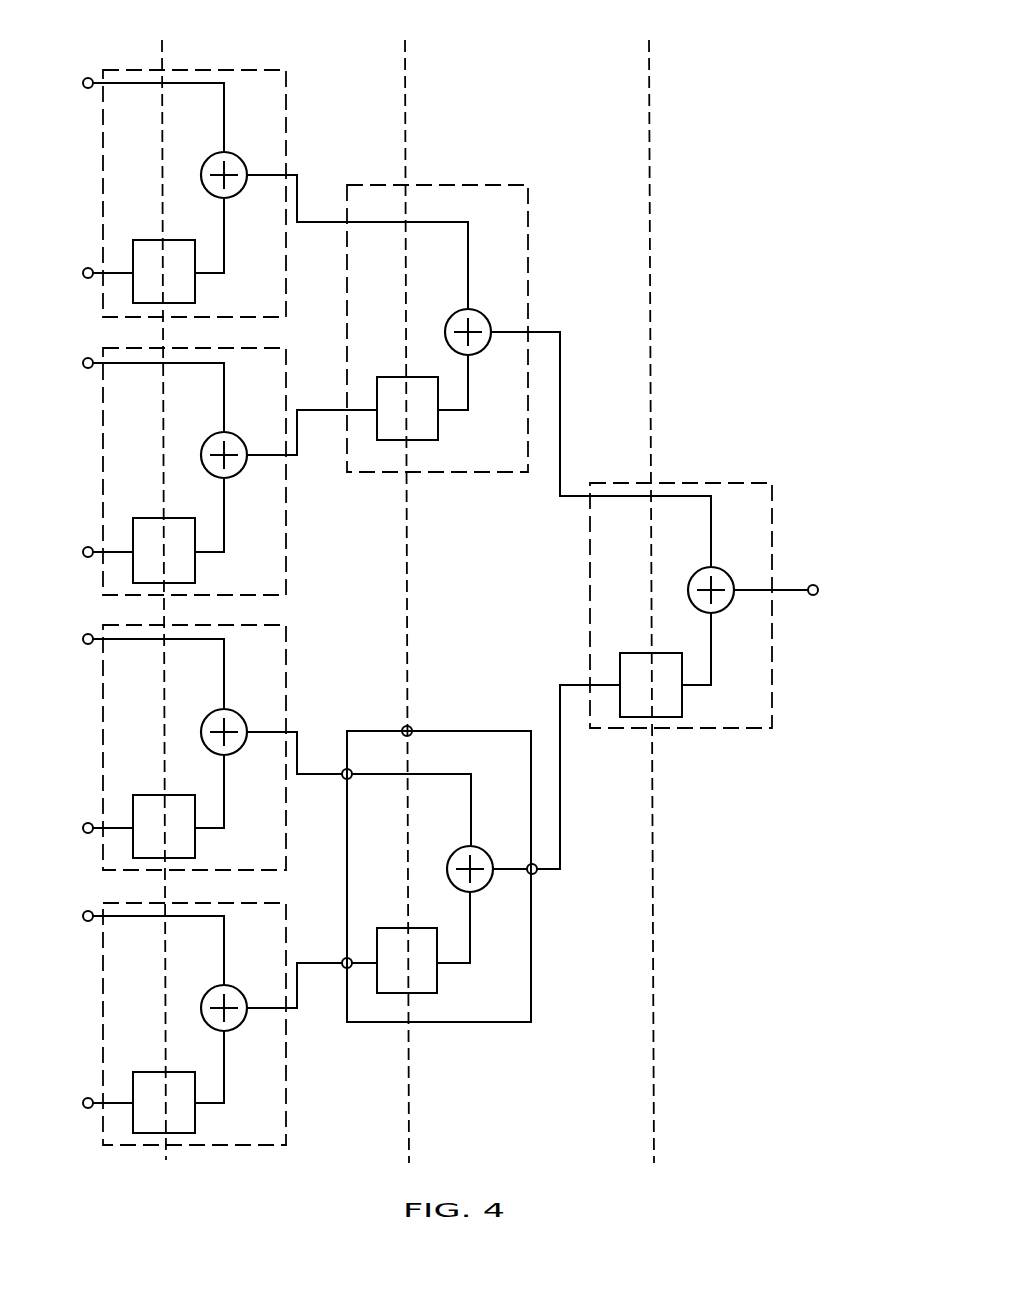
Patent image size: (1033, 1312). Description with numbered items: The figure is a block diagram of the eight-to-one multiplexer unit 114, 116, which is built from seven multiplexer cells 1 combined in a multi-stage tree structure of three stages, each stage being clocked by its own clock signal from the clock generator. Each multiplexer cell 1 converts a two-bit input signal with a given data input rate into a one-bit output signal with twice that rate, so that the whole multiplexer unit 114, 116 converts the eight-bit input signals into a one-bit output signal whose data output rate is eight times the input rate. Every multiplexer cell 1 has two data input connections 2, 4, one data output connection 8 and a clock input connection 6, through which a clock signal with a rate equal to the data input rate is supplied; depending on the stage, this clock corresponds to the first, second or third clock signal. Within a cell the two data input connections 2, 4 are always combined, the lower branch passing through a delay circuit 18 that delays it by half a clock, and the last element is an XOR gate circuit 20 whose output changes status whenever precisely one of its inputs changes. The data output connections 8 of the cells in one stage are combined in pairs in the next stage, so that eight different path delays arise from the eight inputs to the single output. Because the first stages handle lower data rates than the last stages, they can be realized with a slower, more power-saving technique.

The multiplexer cell 1 is at (532, 995).
The data input connection 2 is at (342, 771).
The data input connection 4 is at (343, 967).
The clock input connection 6 is at (412, 728).
The data output connection 8 is at (537, 874).
The delay circuit 18 is at (437, 983).
The XOR gate circuit 20 is at (492, 864).
The multiplexer unit 114 is at (447, 581).
The multiplexer unit 116 is at (794, 81).